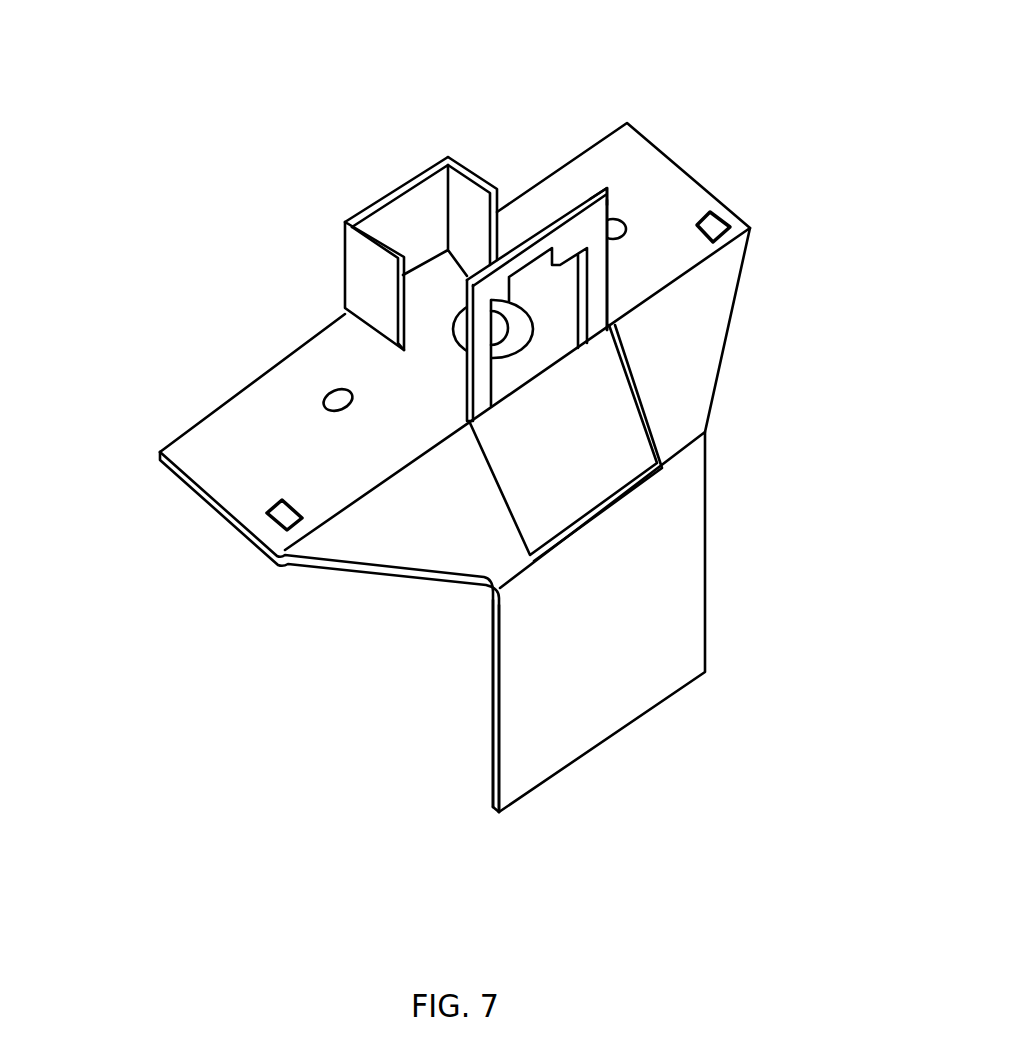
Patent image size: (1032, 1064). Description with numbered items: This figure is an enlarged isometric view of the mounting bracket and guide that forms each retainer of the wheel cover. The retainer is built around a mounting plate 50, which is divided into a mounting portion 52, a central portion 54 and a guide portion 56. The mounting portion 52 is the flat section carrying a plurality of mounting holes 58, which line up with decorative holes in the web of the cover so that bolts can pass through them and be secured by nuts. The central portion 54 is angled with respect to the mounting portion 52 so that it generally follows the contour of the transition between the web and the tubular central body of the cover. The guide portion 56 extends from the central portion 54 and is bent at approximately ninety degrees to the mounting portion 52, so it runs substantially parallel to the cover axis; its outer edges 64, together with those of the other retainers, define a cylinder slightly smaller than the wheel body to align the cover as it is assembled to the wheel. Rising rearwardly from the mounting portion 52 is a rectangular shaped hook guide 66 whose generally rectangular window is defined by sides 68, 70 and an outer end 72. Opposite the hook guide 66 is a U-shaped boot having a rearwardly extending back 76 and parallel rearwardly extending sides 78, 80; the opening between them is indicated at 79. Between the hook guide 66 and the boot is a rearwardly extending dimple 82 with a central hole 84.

The mounting plate 50 is at (446, 498).
The mounting portion 52 is at (410, 452).
The central portion 54 is at (375, 576).
The guide portion 56 is at (487, 740).
The mounting holes 58 is at (316, 400).
The outer edges 64 is at (707, 613).
The hook guide 66 is at (604, 186).
The side of window 68 is at (464, 385).
The side of window 70 is at (612, 277).
The outer end 72 is at (486, 292).
The back 76 is at (321, 203).
The side of boot 78 is at (343, 295).
The slot of clip 79 is at (338, 263).
The side of boot 80 is at (479, 170).
The dimple 82 is at (522, 352).
The central hole 84 is at (508, 327).